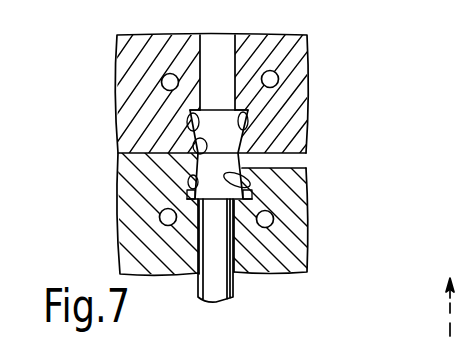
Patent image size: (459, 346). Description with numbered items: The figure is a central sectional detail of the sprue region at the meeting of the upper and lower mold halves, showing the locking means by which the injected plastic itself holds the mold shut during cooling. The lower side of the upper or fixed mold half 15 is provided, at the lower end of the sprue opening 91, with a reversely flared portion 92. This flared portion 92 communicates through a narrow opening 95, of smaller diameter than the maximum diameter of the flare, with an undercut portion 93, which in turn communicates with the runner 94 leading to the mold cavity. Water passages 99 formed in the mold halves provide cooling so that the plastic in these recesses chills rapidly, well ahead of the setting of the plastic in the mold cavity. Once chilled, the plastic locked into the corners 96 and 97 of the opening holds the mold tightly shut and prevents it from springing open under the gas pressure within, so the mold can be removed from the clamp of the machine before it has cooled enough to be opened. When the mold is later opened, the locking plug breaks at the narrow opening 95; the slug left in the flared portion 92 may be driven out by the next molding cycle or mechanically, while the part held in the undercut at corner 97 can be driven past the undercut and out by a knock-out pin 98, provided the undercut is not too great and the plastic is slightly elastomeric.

The upper or fixed mold half 15 is at (237, 43).
The sprue opening 91 is at (220, 52).
The reversely flared portion 92 is at (247, 108).
The undercut portion 93 is at (249, 187).
The runner 94 is at (310, 162).
The narrow opening 95 is at (200, 141).
The corner of the opening 96 is at (194, 125).
The corner of the opening (undercut) 97 is at (193, 178).
The knock-out pin 98 is at (214, 249).
The water passages 99 is at (278, 73).